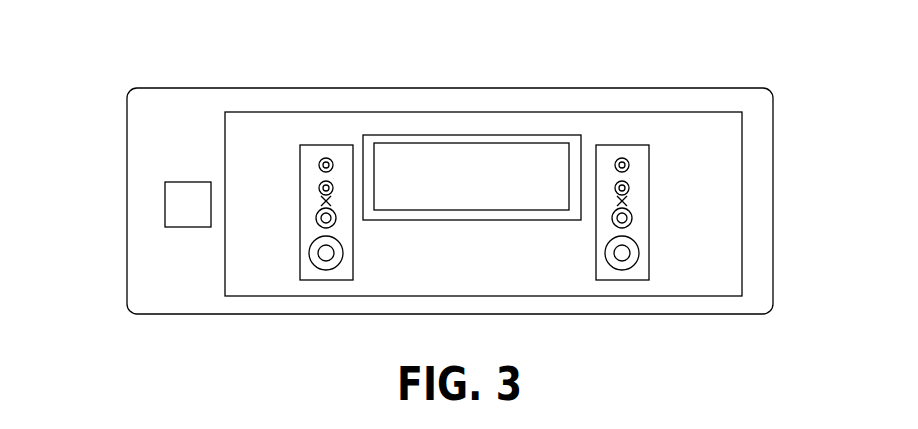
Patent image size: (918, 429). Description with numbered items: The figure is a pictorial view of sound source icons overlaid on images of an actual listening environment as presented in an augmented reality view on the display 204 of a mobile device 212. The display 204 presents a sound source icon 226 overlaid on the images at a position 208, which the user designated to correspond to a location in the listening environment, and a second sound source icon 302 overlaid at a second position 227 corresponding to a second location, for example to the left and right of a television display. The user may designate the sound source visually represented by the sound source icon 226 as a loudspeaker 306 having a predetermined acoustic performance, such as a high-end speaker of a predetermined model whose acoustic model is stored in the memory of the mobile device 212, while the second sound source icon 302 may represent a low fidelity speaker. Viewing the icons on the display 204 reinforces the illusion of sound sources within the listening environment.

The mobile device 212 is at (127, 130).
The display 204 is at (712, 180).
The sound source icon 226 is at (327, 144).
The loudspeaker 306 is at (301, 150).
The second sound source icon 302 is at (622, 144).
The position 208 is at (318, 201).
The second position 227 is at (627, 200).